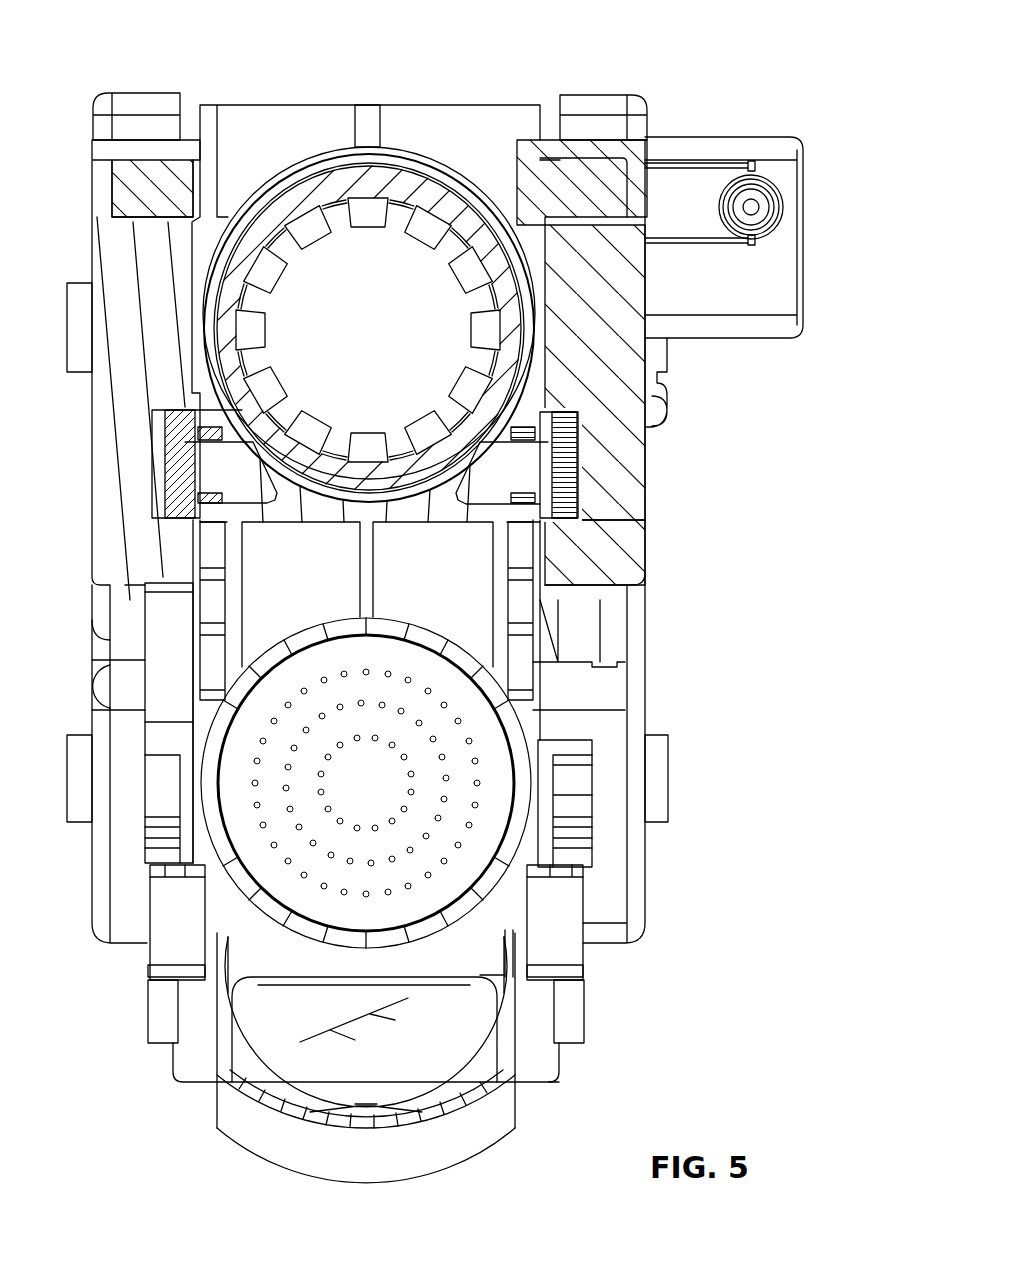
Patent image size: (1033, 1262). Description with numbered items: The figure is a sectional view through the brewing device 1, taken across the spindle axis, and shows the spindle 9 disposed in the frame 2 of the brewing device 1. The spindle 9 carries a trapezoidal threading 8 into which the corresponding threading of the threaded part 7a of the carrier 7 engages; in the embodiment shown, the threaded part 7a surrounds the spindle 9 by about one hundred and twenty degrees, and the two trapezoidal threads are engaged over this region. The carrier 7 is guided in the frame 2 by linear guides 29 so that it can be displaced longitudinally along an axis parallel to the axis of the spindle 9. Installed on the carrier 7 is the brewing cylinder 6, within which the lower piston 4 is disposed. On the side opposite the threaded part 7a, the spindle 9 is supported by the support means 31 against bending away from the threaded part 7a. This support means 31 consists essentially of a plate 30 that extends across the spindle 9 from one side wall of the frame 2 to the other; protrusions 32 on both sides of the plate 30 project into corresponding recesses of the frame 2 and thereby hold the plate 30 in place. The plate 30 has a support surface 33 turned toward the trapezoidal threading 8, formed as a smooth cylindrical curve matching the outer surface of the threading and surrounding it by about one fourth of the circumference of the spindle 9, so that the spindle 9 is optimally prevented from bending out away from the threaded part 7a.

The brewing device 1 is at (658, 52).
The frame 2 is at (623, 477).
The lower piston 4 is at (502, 830).
The brewing cylinder 6 is at (533, 733).
The carrier 7 is at (440, 513).
The threaded part 7a is at (590, 552).
The trapezoidal threading 8 is at (290, 195).
The spindle 9 is at (400, 185).
The linear guides 29 is at (175, 468).
The plate 30 is at (500, 120).
The support means 31 is at (212, 100).
The protrusions 32 is at (135, 185).
The support surface 33 is at (345, 168).